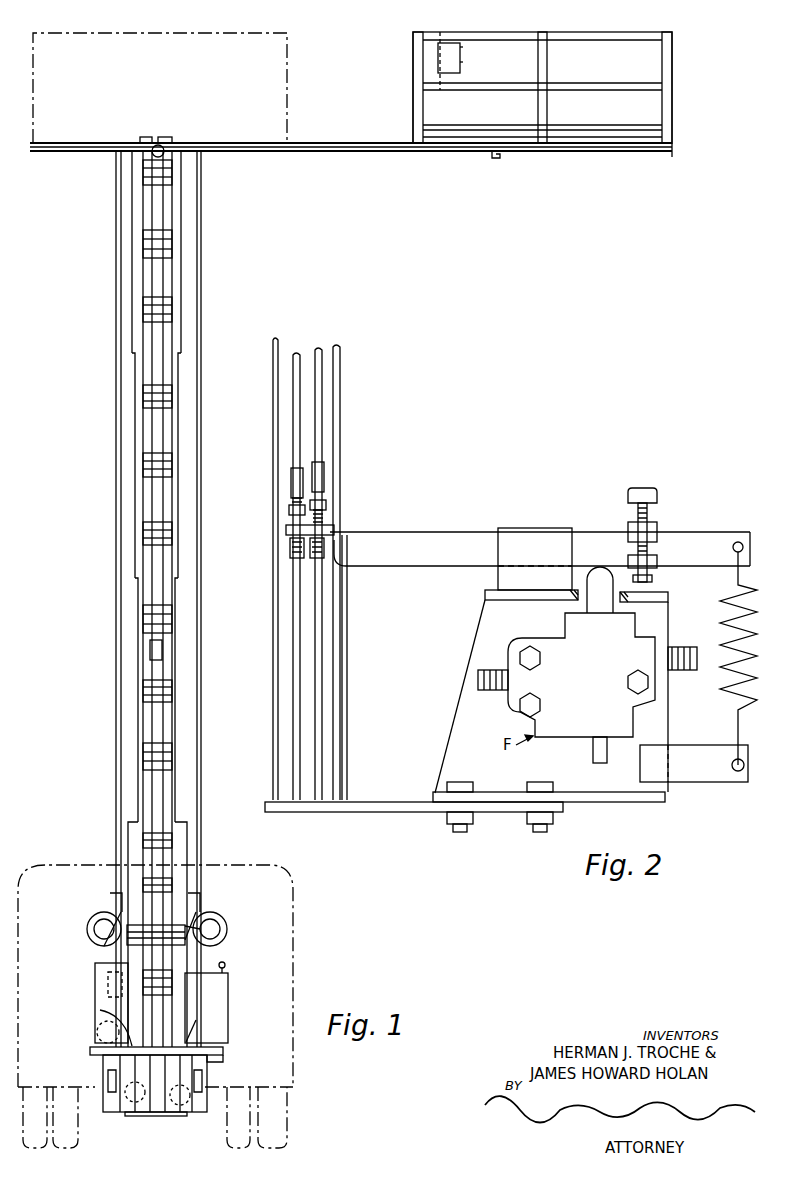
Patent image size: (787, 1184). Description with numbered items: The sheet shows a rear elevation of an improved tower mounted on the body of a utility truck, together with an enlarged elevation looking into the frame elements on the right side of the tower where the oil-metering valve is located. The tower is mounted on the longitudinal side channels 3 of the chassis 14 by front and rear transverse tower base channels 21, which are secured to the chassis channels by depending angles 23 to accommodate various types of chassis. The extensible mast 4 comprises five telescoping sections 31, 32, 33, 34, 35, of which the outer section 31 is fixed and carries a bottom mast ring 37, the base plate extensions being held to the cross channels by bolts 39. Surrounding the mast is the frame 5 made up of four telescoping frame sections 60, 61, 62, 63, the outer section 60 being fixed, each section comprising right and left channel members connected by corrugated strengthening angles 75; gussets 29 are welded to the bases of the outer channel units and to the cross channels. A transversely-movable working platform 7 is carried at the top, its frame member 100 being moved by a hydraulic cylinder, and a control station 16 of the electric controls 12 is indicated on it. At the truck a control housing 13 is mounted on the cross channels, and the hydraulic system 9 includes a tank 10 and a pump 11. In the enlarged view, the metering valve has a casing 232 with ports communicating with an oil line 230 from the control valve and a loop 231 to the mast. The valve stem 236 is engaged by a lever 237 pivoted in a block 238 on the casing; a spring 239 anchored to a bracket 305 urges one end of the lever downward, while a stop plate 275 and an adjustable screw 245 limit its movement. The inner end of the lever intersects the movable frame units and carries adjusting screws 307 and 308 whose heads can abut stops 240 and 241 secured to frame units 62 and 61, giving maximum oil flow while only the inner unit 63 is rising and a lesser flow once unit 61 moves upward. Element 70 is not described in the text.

In FIG. 1, the longitudinal side channels 3 is at (105, 1078).
In FIG. 1, the mast 4 is at (174, 505).
In FIG. 1, the frame 5 is at (140, 503).
In FIG. 2, the frame 5 is at (342, 392).
In FIG. 1, the transversely-movable working platform 7 is at (300, 132).
In FIG. 1, the hydraulic system 9 is at (192, 1112).
In FIG. 2, the hydraulic system 9 is at (555, 525).
In FIG. 1, the tank 10 is at (241, 993).
In FIG. 1, the pump 11 is at (210, 1085).
In FIG. 1, the electric controls 12 is at (115, 598).
In FIG. 1, the control housing 13 is at (100, 985).
In FIG. 1, the chassis 14 is at (113, 1115).
In FIG. 1, the control station 16 is at (433, 53).
In FIG. 1, the tower base channels 21 is at (290, 878).
In FIG. 1, the depending angles 23 is at (103, 1112).
In FIG. 1, the gussets 29 is at (130, 1040).
In FIG. 1, the outer mast section 31 is at (165, 869).
In FIG. 1, the mast section 32 is at (163, 781).
In FIG. 1, the mast section 33 is at (158, 645).
In FIG. 1, the mast section 34 is at (165, 558).
In FIG. 1, the mast section 35 is at (163, 222).
In FIG. 1, the bottom mast ring 37 is at (155, 1075).
In FIG. 1, the bolts 39 is at (160, 1080).
In FIG. 1, the outer frame section 60 is at (134, 858).
In FIG. 2, the outer frame section 60 is at (282, 618).
In FIG. 1, the frame section 61 is at (137, 651).
In FIG. 2, the frame section 61 is at (303, 641).
In FIG. 1, the frame section 62 is at (135, 378).
In FIG. 2, the frame section 62 is at (325, 665).
In FIG. 1, the inner frame section 63 is at (146, 137).
In FIG. 2, the inner frame section 63 is at (342, 692).
In FIG. 1, the motor 70 is at (168, 1115).
In FIG. 1, the corrugated strengthening angles 75 is at (150, 175).
In FIG. 1, the frame member 100 is at (500, 156).
In FIG. 2, the oil line 230 is at (688, 638).
In FIG. 2, the oil line loop 231 is at (485, 672).
In FIG. 2, the valve casing 232 is at (515, 700).
In FIG. 2, the valve stem 236 is at (608, 588).
In FIG. 2, the lever 237 is at (300, 540).
In FIG. 2, the block 238 is at (512, 528).
In FIG. 2, the spring 239 is at (725, 690).
In FIG. 2, the stop 240 is at (320, 480).
In FIG. 2, the stop 241 is at (300, 470).
In FIG. 2, the screw 245 is at (652, 540).
In FIG. 2, the stop plate 275 is at (648, 612).
In FIG. 2, the bracket 305 is at (690, 770).
In FIG. 2, the adjusting screw 307 is at (325, 512).
In FIG. 2, the adjusting screw 308 is at (320, 535).